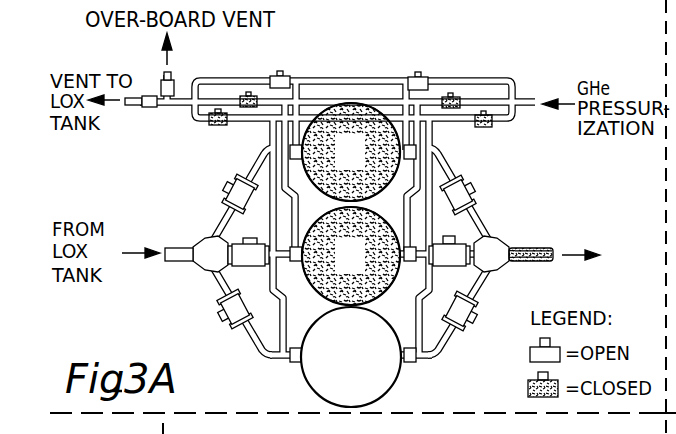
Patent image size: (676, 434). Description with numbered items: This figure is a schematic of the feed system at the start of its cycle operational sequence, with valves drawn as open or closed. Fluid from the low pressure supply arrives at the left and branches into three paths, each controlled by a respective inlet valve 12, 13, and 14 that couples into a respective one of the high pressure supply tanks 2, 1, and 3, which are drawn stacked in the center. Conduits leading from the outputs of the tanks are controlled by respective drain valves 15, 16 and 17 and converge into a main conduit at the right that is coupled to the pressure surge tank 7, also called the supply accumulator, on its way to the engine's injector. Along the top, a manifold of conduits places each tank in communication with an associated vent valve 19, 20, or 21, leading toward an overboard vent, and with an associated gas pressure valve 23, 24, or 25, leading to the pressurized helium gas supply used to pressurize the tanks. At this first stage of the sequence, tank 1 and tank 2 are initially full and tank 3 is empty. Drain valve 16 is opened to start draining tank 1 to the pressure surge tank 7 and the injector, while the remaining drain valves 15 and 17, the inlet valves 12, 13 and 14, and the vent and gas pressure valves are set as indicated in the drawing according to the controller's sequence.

The high pressure supply tank 1 is at (356, 272).
The high pressure supply tank 2 is at (356, 168).
The high pressure supply tank 3 is at (356, 373).
The pressure surge tank 7 is at (579, 255).
The inlet valve 12 is at (226, 184).
The inlet valve 13 is at (251, 240).
The inlet valve 14 is at (233, 329).
The drain valve 15 is at (478, 187).
The drain valve 16 is at (448, 240).
The drain valve 17 is at (466, 338).
The vent valve 19 is at (248, 108).
The vent valve 20 is at (291, 58).
The vent valve 21 is at (214, 126).
The gas pressure valve 23 is at (448, 109).
The gas pressure valve 24 is at (420, 72).
The gas pressure valve 25 is at (490, 128).